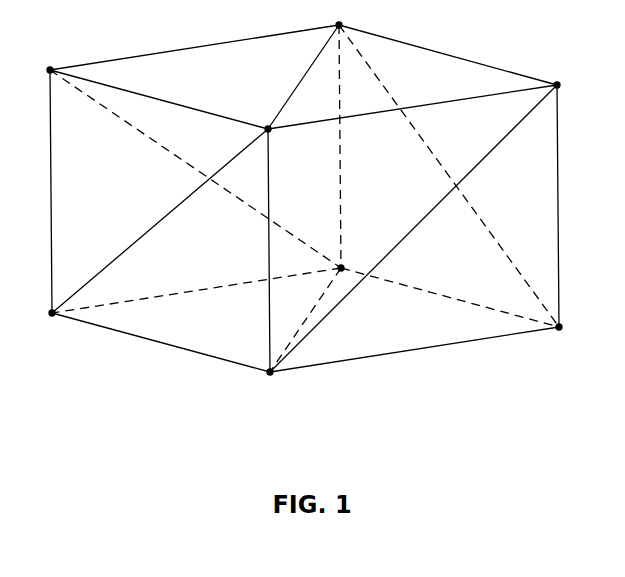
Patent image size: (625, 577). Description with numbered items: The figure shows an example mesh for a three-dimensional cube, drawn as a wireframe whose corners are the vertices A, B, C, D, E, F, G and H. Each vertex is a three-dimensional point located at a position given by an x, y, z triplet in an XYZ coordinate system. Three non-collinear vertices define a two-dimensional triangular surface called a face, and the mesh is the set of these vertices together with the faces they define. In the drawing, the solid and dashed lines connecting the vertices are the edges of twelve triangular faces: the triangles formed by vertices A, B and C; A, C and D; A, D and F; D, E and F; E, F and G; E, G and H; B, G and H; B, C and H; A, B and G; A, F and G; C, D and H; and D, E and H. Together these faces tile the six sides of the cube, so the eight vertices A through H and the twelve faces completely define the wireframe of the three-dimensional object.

The vertex A is at (348, 16).
The vertex B is at (566, 81).
The vertex C is at (569, 319).
The vertex D is at (350, 257).
The vertex E is at (43, 324).
The vertex F is at (42, 83).
The vertex G is at (277, 141).
The vertex H is at (280, 382).